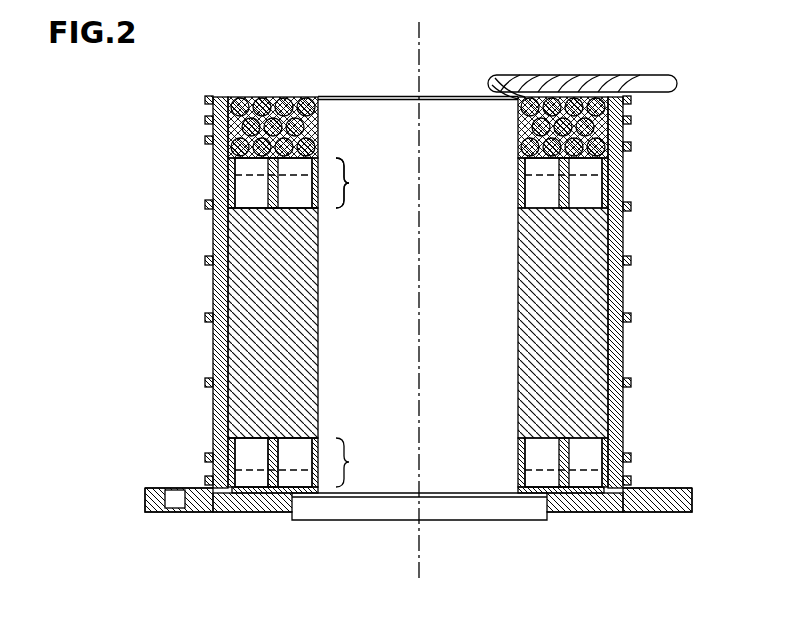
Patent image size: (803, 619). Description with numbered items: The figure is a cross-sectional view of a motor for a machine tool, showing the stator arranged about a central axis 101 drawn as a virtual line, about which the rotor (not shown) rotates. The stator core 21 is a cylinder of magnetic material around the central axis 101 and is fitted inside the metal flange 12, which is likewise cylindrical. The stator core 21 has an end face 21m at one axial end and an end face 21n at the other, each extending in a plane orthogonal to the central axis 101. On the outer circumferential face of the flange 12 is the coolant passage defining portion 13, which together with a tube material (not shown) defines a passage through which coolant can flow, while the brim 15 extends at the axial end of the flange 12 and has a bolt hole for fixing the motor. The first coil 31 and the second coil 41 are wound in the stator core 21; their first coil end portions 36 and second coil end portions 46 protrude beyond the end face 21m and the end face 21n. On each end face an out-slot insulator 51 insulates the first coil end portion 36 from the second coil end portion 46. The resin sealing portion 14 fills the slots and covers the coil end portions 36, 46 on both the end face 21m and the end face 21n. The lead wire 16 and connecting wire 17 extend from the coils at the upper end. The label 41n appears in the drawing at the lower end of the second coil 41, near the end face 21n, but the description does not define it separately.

The flange 12 is at (143, 497).
The coolant passage defining portion 13 is at (213, 258).
The resin sealing portion 14 is at (600, 128).
The brim 15 is at (694, 491).
The lead wire 16 is at (548, 80).
The connecting wire 17 is at (258, 108).
The stator core 21 is at (610, 290).
The end face 21m is at (257, 208).
The end face 21n is at (257, 439).
The first coil 31 is at (242, 162).
The first coil end portion 36 is at (351, 183).
The second coil 41 is at (310, 163).
The lower rib 41n is at (273, 462).
The second coil end portion 46 is at (342, 183).
The out-slot insulator 51 is at (245, 181).
The central axis 101 is at (424, 80).